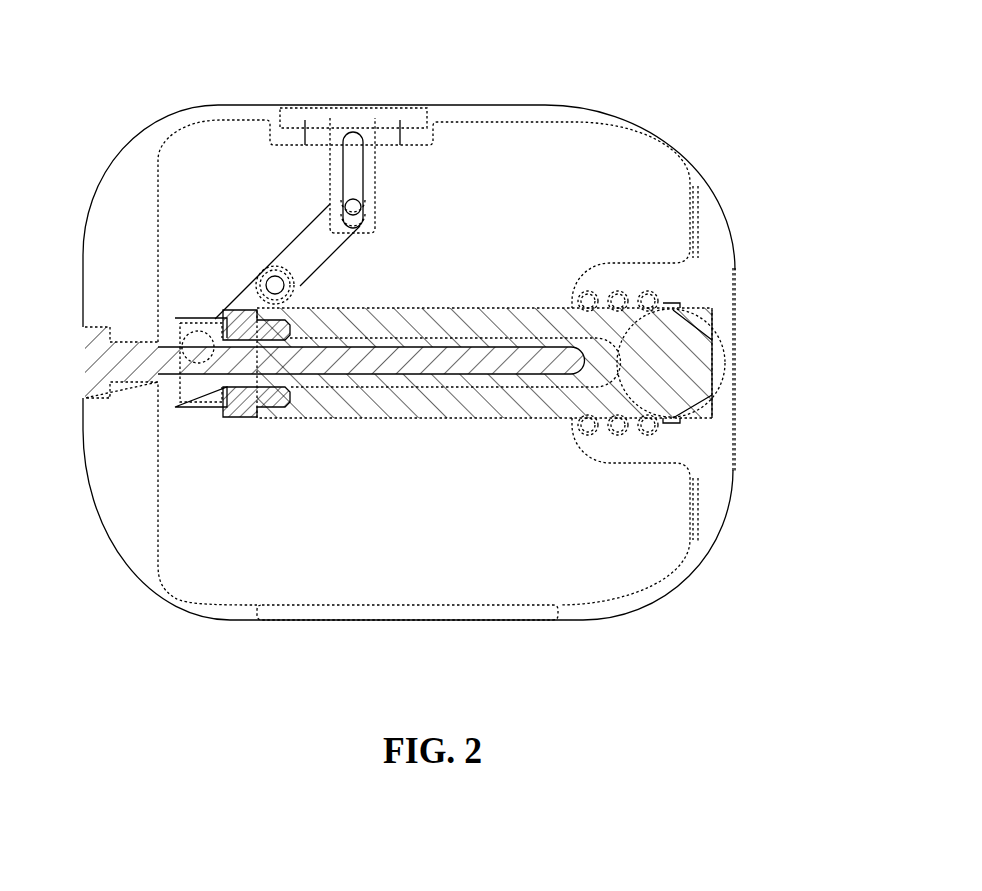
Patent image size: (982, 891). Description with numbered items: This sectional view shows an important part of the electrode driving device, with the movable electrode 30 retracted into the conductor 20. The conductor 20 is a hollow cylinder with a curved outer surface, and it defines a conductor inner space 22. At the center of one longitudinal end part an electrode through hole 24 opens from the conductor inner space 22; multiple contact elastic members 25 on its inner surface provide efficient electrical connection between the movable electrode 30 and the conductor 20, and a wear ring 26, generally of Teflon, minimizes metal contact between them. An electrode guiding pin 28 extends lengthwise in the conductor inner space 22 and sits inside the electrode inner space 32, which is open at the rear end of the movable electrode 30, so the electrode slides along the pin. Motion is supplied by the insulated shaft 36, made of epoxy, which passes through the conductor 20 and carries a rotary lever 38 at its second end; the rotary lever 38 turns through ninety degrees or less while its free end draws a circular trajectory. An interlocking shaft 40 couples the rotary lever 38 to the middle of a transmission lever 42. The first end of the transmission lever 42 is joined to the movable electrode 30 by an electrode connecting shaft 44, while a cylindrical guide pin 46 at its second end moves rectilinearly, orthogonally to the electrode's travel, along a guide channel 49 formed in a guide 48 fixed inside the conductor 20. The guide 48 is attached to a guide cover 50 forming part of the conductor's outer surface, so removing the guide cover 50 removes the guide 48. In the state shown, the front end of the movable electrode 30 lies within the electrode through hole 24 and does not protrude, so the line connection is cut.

The conductor 20 is at (606, 103).
The conductor inner space 22 is at (505, 224).
The electrode through hole 24 is at (712, 402).
The contact elastic members 25 is at (693, 420).
The wear ring 26 is at (712, 310).
The electrode guiding pin 28 is at (490, 420).
The movable electrode 30 is at (718, 335).
The electrode inner space 32 is at (731, 384).
The insulated shaft 36 is at (360, 370).
The rotary lever 38 is at (305, 378).
The interlocking shaft 40 is at (258, 269).
The transmission lever 42 is at (297, 243).
The electrode connecting shaft 44 is at (160, 383).
The guide pin 46 is at (347, 205).
The guide 48 is at (373, 195).
The guide channel 49 is at (360, 165).
The guide cover 50 is at (397, 103).